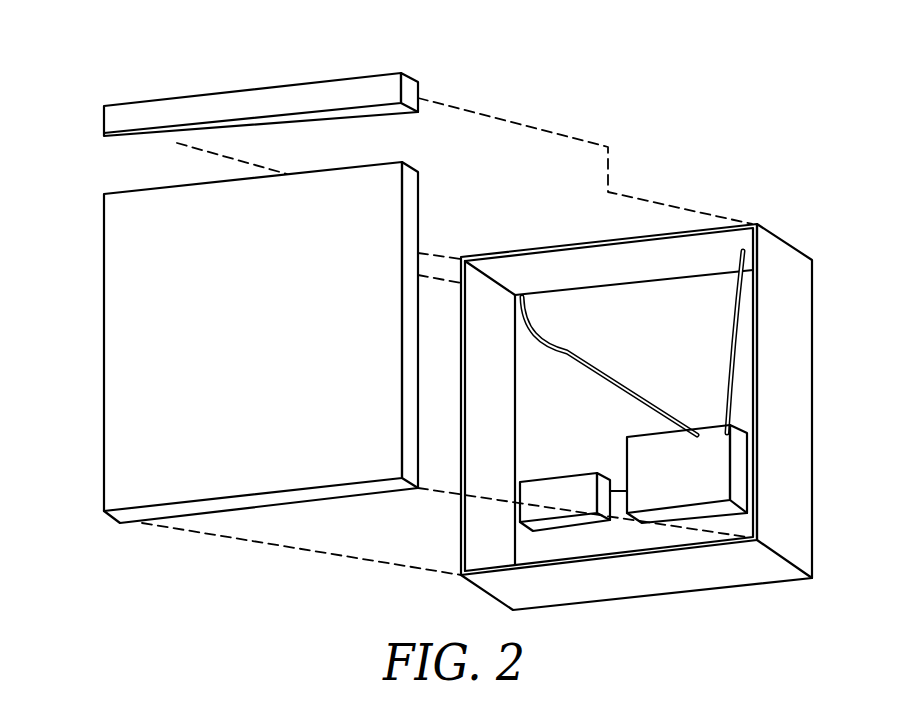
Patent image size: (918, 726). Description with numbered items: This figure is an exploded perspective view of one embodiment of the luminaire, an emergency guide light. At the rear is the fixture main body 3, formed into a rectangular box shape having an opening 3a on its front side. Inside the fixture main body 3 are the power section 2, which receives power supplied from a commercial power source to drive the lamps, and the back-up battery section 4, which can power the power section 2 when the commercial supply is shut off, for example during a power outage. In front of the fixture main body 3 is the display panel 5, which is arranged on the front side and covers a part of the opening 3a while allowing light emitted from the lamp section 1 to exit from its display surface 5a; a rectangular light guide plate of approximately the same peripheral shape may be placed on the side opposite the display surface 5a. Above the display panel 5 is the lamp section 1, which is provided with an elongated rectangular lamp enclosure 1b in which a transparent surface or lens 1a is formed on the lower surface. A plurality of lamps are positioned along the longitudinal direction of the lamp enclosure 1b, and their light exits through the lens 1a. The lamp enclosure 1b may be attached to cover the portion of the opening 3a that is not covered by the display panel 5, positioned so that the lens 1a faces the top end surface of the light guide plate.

The lamp section 1 is at (231, 102).
The lens 1a is at (123, 142).
The lamp enclosure 1b is at (122, 115).
The power section 2 is at (648, 448).
The fixture main body 3 is at (662, 404).
The opening 3a is at (592, 307).
The back-up battery section 4 is at (575, 487).
The display panel 5 is at (229, 342).
The display surface 5a is at (122, 370).